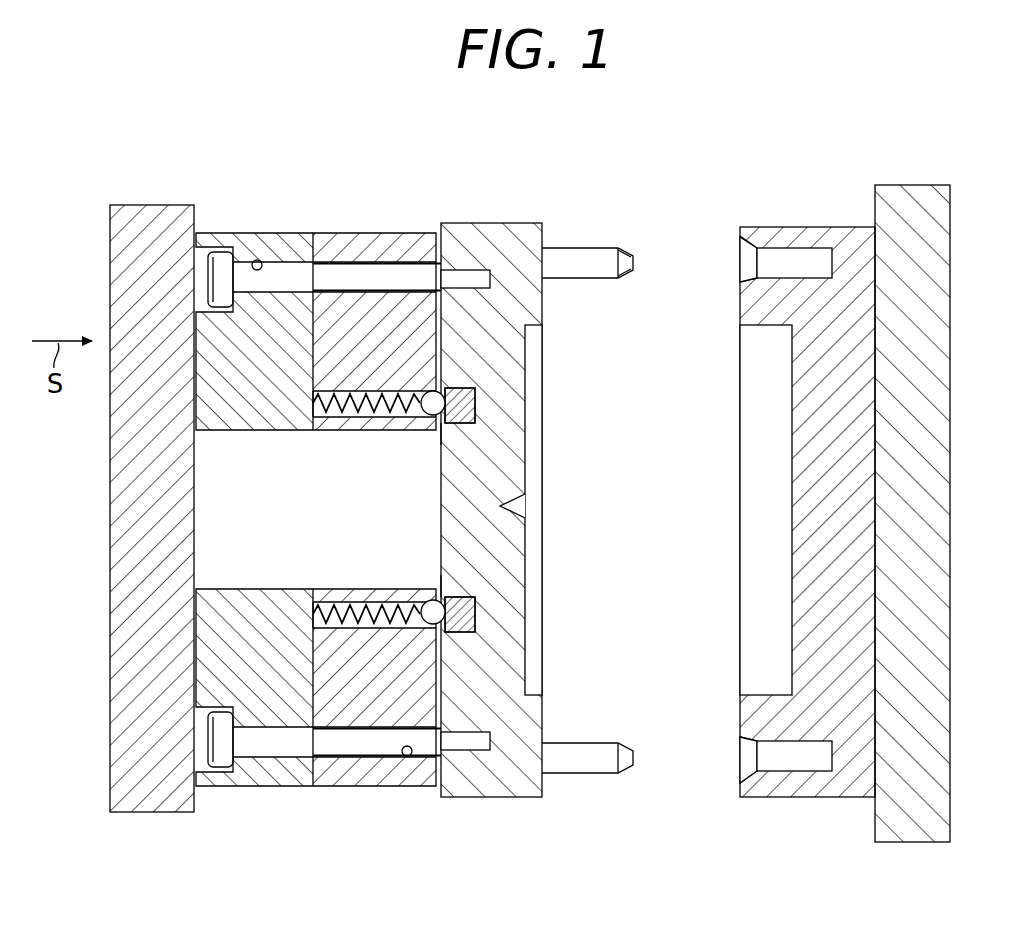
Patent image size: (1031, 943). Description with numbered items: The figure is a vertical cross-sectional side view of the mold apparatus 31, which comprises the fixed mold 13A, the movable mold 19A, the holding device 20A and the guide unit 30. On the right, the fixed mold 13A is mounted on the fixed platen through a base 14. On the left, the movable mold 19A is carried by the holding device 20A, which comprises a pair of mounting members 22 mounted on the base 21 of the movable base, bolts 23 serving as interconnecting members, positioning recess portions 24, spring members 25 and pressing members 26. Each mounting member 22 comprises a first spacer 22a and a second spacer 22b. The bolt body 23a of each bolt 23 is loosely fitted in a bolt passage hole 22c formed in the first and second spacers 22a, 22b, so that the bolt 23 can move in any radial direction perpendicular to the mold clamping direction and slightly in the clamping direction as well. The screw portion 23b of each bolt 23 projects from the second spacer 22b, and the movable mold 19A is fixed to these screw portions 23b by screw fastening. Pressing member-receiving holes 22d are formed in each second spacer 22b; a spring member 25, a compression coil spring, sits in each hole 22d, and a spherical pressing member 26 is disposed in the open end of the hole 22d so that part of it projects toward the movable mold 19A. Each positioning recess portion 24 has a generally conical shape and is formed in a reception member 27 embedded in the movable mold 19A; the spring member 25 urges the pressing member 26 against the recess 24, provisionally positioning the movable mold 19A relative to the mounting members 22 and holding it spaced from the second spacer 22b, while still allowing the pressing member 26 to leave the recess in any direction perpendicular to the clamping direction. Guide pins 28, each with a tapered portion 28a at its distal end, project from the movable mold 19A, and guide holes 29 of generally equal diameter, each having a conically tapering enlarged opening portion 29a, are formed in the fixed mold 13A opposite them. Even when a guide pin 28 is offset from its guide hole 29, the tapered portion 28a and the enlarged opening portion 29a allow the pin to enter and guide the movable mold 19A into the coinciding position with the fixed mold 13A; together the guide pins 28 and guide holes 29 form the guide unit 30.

The fixed mold 13A is at (810, 798).
The base 14 is at (950, 775).
The movable mold 19A is at (488, 798).
The holding device 20A is at (312, 818).
The base 21 is at (157, 812).
The mounting member 22 is at (313, 233).
The first spacer 22a is at (276, 250).
The second spacer 22b is at (410, 240).
The bolt passage hole 22c is at (257, 260).
The pressing member-receiving hole 22d is at (310, 412).
The bolt 23 is at (213, 262).
The bolt body 23a is at (363, 262).
The screw portion 23b is at (463, 272).
The positioning recess portion 24 is at (426, 413).
The spring member 25 is at (330, 418).
The pressing member 26 is at (439, 440).
The reception member 27 is at (478, 410).
The guide pin 28 is at (577, 248).
The tapered portion 28a is at (624, 257).
The guide hole 29 is at (796, 250).
The enlarged opening portion 29a is at (742, 272).
The guide unit 30 is at (613, 788).
The mold apparatus 31 is at (685, 166).